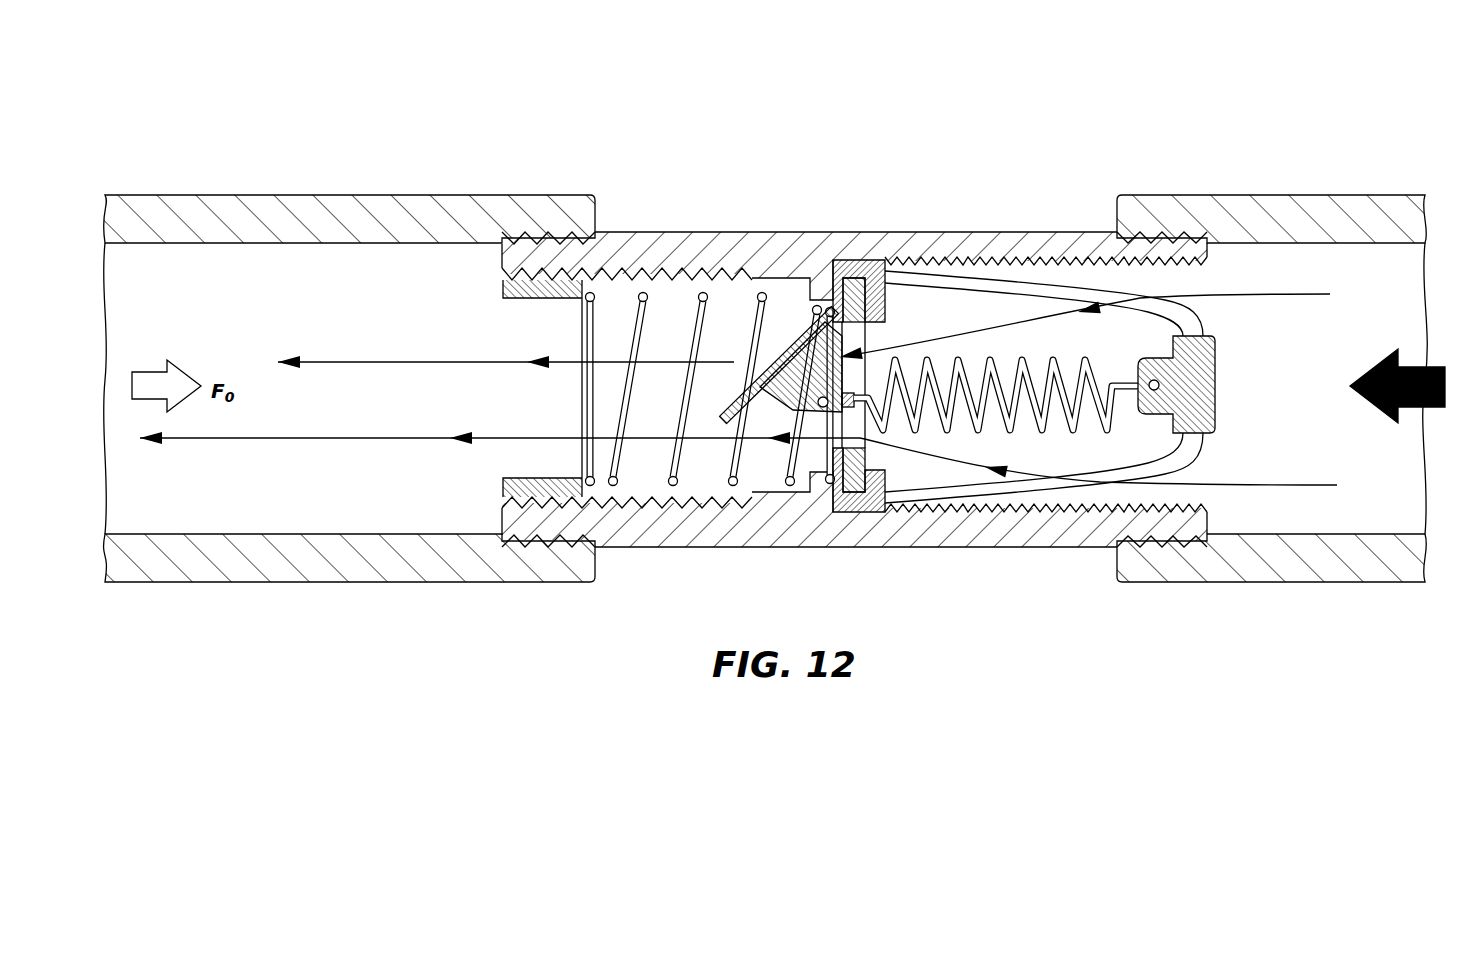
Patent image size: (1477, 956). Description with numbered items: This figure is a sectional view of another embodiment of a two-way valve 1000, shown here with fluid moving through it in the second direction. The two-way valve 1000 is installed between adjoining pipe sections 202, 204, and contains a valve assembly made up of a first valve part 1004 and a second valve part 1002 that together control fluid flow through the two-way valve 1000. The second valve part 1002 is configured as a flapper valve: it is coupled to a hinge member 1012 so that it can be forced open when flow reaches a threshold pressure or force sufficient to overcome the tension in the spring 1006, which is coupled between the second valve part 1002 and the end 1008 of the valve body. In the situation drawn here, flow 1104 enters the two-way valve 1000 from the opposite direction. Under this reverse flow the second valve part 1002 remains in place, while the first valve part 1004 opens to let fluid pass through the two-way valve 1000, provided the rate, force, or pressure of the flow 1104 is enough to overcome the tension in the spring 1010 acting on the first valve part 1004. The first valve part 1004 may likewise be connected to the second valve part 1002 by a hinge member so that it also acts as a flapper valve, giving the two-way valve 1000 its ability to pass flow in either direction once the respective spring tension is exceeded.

The outlet pipe 202 is at (1296, 201).
The inlet pipe 204 is at (322, 207).
The two-way valve 1000 is at (728, 128).
The second valve part 1002 is at (863, 467).
The first valve part 1004 is at (833, 365).
The spring 1006 is at (695, 325).
The end of the valve body 1008 is at (527, 292).
The spring 1010 is at (997, 362).
The hinge member 1012 is at (844, 266).
The flow 1104 is at (1432, 372).